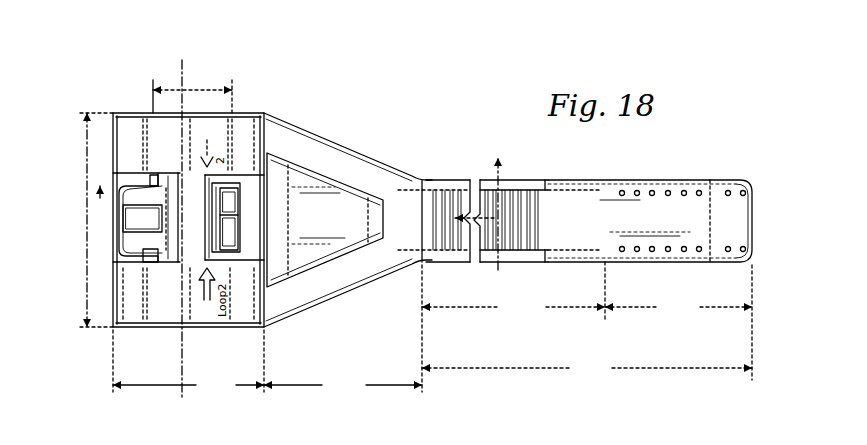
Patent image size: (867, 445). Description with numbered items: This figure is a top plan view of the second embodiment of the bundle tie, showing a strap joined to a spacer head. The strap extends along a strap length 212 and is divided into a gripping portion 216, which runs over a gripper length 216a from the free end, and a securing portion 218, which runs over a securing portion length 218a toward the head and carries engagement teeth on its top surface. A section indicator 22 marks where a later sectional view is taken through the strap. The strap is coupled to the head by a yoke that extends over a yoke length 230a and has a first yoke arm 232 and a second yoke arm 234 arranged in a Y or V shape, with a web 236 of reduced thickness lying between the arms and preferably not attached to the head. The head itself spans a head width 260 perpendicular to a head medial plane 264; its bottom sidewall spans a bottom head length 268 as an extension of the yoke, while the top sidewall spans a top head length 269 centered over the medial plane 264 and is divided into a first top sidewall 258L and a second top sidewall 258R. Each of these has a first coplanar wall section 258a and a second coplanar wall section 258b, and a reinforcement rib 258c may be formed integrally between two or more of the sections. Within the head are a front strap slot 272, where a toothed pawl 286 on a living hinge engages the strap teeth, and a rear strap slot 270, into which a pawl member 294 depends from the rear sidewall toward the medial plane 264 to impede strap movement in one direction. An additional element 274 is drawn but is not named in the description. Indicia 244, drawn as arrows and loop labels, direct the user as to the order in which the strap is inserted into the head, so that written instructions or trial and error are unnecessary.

The strap length 212 is at (587, 368).
The gripping portion 216 is at (693, 167).
The gripper length 216a is at (678, 322).
The securing portion 218 is at (477, 163).
The securing portion length 218a is at (513, 292).
The section line 22- 22 is at (293, 220).
The yoke length 230a is at (343, 329).
The first yoke arm 232 is at (320, 290).
The second yoke arm 234 is at (307, 153).
The web 236 is at (338, 210).
The indicia 244 is at (208, 160).
The first coplanar wall section 258a is at (147, 135).
The second coplanar wall section 258b is at (230, 135).
The reinforcement rib 258c is at (155, 305).
The first top sidewall 258L is at (148, 327).
The second top sidewall 258R is at (163, 152).
The head width 260 is at (143, 218).
The head medial plane 264 is at (178, 74).
The bottom head length 268 is at (188, 362).
The top head length 269 is at (200, 90).
The rear strap slot 270 is at (150, 198).
The front strap slot 272 is at (226, 240).
The rib 274 is at (150, 182).
The toothed pawl 286 is at (237, 232).
The pawl member 294 is at (140, 250).